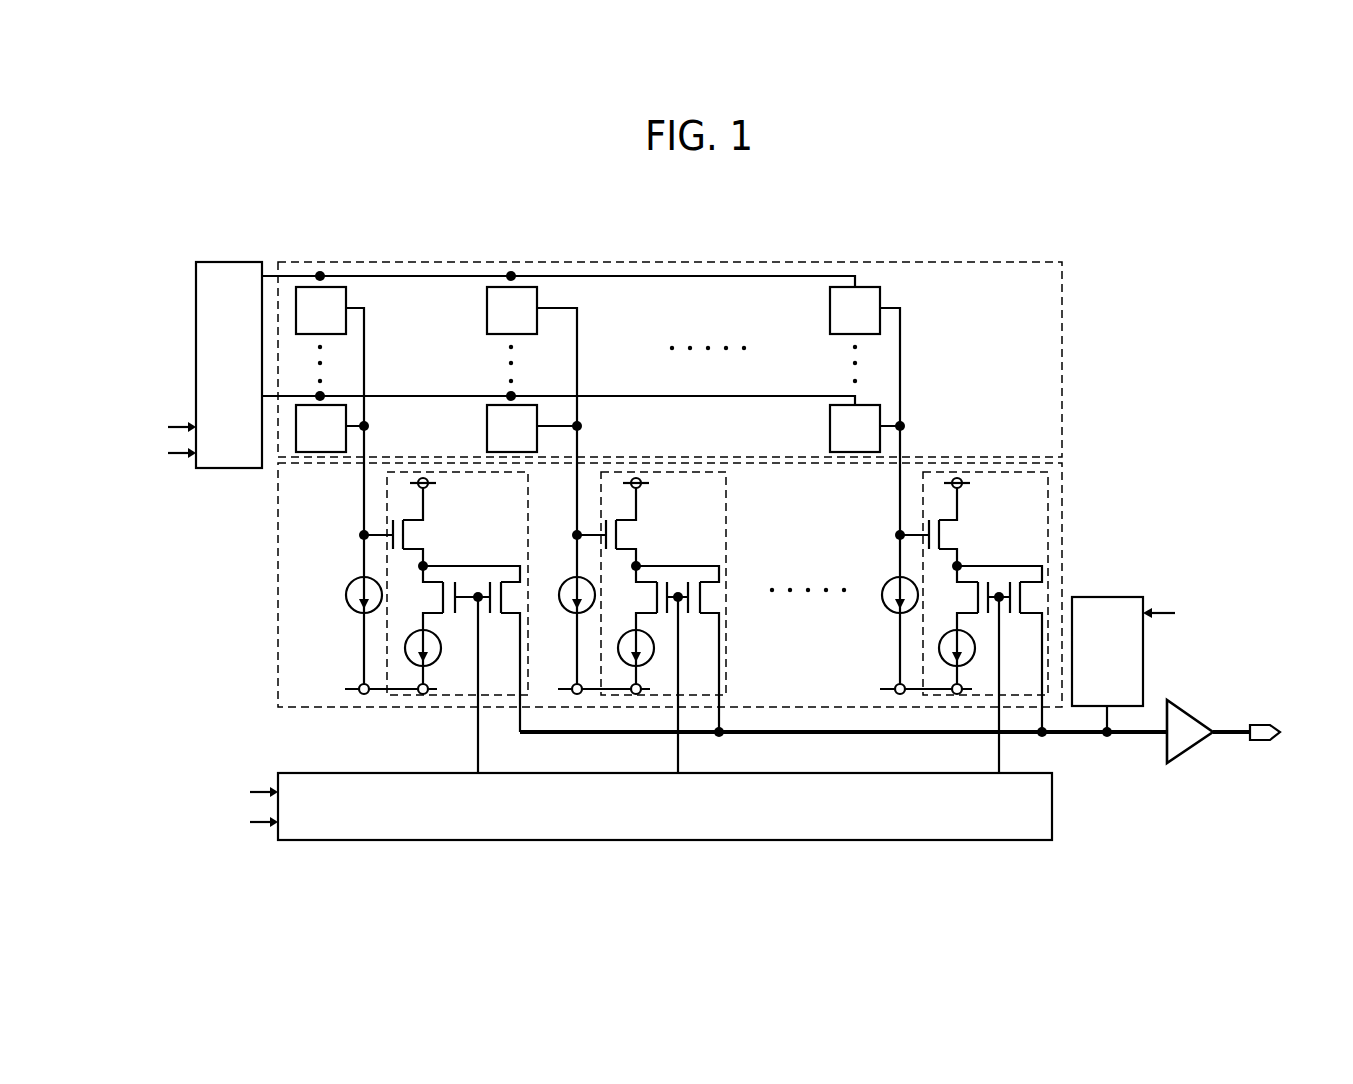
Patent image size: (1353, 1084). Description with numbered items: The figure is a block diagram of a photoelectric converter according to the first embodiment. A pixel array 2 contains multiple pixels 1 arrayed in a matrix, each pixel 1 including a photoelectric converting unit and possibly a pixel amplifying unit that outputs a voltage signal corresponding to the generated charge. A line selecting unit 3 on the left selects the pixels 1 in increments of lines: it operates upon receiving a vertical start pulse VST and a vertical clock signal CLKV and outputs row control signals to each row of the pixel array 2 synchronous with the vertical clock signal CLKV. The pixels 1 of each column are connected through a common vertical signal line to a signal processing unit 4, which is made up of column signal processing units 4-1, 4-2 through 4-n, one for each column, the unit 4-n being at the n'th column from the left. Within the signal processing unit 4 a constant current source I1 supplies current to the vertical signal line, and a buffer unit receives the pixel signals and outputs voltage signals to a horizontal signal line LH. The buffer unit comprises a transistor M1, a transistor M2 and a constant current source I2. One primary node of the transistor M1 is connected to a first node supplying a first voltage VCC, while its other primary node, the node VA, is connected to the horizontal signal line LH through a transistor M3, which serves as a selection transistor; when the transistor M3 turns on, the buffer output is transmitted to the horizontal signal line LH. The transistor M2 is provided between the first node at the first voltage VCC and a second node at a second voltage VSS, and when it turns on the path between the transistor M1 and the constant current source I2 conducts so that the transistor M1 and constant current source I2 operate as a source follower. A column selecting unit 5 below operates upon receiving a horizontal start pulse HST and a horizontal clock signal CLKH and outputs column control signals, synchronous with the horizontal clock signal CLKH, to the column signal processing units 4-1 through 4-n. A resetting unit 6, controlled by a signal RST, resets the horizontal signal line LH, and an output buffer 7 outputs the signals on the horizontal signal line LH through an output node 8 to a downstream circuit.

The pixel 1 is at (327, 325).
The pixel array 2 is at (1067, 378).
The line selecting unit 3 is at (236, 378).
The signal processing unit 4 is at (278, 525).
The column signal processing unit 4-1 is at (388, 483).
The column signal processing unit 4-2 is at (726, 520).
The column signal processing unit 4-n is at (1048, 520).
The column selecting unit 5 is at (676, 822).
The resetting unit 6 is at (1115, 665).
The output buffer 7 is at (1193, 728).
The output node 8 is at (1268, 730).
The transistor M1 is at (420, 537).
The transistor M2 is at (430, 595).
The transistor M3 is at (515, 598).
The constant current source I1 is at (350, 608).
The constant current source I2 is at (410, 655).
The node VA is at (430, 562).
The first voltage VCC is at (450, 485).
The second voltage VSS is at (410, 679).
The horizontal signal line LH is at (1130, 732).
The signal RST is at (1179, 613).
The vertical start pulse VST is at (159, 427).
The vertical clock signal CLKV is at (151, 454).
The horizontal start pulse HST is at (240, 792).
The horizontal clock signal CLKH is at (232, 822).